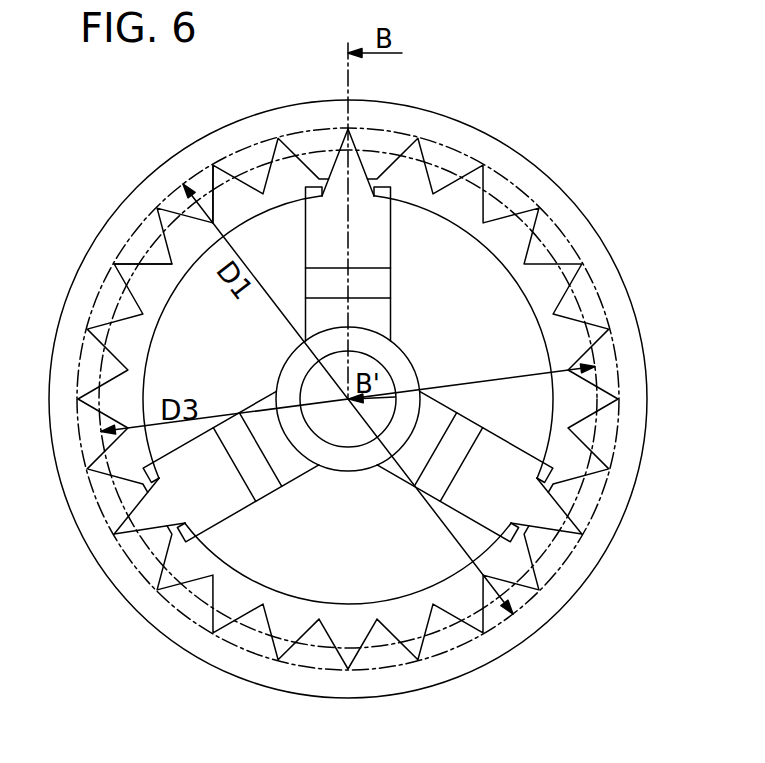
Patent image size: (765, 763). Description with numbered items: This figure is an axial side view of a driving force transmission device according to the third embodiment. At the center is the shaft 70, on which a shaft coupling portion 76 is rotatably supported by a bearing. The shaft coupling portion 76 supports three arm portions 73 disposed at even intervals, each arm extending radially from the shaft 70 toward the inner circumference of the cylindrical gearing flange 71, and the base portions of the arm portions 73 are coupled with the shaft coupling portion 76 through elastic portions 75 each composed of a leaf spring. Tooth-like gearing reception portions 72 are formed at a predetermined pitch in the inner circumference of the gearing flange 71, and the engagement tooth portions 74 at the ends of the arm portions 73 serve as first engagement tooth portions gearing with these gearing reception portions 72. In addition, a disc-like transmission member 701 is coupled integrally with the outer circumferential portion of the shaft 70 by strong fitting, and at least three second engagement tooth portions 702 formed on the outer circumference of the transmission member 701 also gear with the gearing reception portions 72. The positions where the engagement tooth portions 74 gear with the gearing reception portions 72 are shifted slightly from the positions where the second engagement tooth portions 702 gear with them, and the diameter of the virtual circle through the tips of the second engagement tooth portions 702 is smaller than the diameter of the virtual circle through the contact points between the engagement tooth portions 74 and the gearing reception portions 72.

The shaft 70 is at (342, 432).
The gearing flange 71 is at (572, 216).
The gearing reception portions 72 is at (322, 155).
The arm portions 73 is at (386, 234).
The engagement tooth portions 74 is at (375, 150).
The elastic portions 75 is at (389, 283).
The shaft coupling portion 76 is at (403, 360).
The transmission member 701 is at (192, 303).
The second engagement tooth portions 702 is at (213, 197).